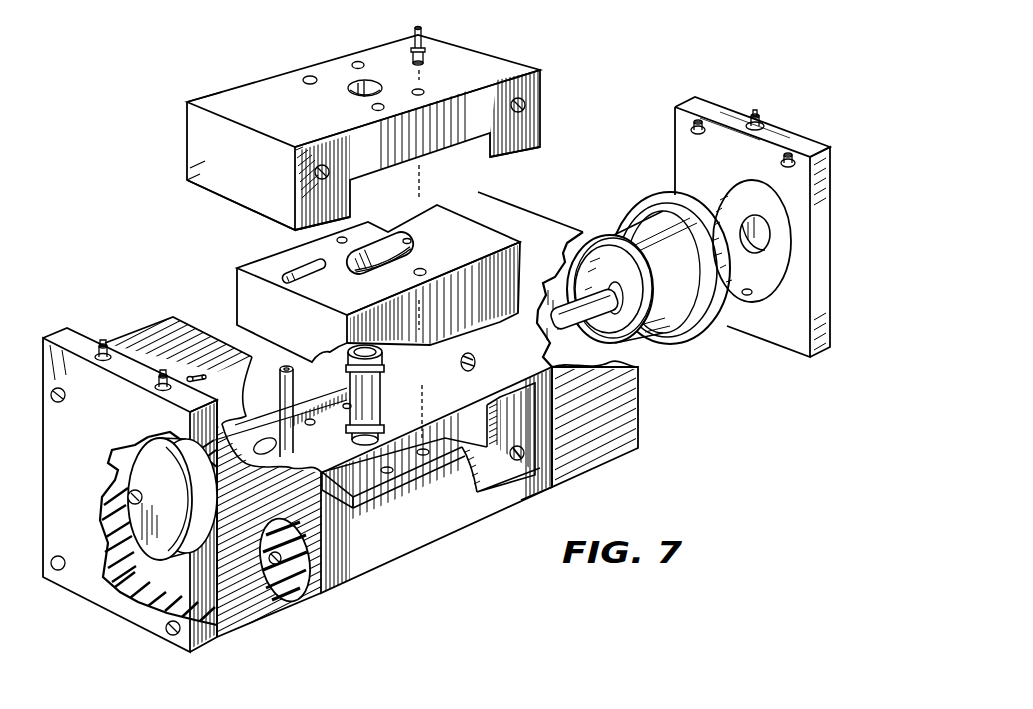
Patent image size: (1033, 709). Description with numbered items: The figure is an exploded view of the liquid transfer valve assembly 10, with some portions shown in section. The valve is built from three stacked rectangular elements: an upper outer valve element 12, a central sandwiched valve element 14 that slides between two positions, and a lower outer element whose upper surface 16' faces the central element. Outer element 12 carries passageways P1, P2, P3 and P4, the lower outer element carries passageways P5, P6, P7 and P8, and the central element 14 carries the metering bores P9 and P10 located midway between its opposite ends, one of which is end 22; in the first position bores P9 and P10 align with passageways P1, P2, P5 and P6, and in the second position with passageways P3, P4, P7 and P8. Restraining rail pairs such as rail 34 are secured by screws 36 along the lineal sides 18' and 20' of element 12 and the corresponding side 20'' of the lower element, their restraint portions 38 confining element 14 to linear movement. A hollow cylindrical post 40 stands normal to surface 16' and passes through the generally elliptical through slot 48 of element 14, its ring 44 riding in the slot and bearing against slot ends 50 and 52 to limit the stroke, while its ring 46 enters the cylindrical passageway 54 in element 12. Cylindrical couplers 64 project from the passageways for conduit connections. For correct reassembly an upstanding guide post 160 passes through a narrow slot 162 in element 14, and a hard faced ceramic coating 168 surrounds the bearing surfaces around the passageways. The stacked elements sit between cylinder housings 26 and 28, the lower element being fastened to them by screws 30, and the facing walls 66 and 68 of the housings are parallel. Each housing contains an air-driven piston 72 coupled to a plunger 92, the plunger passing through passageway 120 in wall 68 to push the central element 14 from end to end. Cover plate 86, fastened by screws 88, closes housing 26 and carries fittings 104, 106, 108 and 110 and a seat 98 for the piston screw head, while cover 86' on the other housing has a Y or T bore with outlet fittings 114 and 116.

The liquid transfer valve assembly 10 is at (178, 242).
The outer valve element 12 is at (492, 52).
The central valve element 14 is at (247, 293).
The surface of outer element 16' is at (441, 354).
The lineal side 18' is at (204, 79).
The lineal side 20' is at (301, 211).
The lineal side 20'' is at (464, 497).
The end of central element 22 is at (230, 156).
The cylinder housing 26 is at (158, 315).
The cylinder housing 28 is at (608, 462).
The screws 30 is at (283, 600).
The restraining rail pair 34 is at (490, 488).
The screws 36 is at (526, 104).
The restraint portions 38 is at (520, 147).
The hollow cylindrical post 40 is at (381, 400).
The annular ring 44 is at (381, 426).
The annular ring 46 is at (355, 356).
The through slot 48 is at (400, 235).
The slot end 50 is at (367, 272).
The slot end 52 is at (410, 240).
The cylindrical passageway 54 is at (358, 93).
The cylindrical couplers 64 is at (425, 34).
The facing wall 66 is at (323, 578).
The facing wall 68 is at (545, 490).
The piston 72 is at (660, 320).
The cover plate 86 is at (111, 519).
The cover 86' is at (782, 244).
The screws 88 is at (173, 640).
The plunger 92 is at (610, 305).
The seat 98 is at (770, 236).
The fitting 104 is at (77, 340).
The fitting 106 is at (158, 390).
The fitting 108 is at (103, 340).
The fitting 110 is at (198, 375).
The outlet fitting 114 is at (690, 128).
The outlet fitting 116 is at (795, 165).
The passageway 120 is at (476, 362).
The upstanding post 160 is at (282, 410).
The narrow slot 162 is at (300, 268).
The hard faced ceramic coating 168 is at (440, 445).
The passageway P1 is at (306, 76).
The passageway P2 is at (374, 109).
The passageway P3 is at (357, 61).
The passageway P4 is at (424, 91).
The passageway P5 is at (310, 418).
The passageway P6 is at (385, 468).
The passageway P7 is at (345, 404).
The passageway P8 is at (425, 448).
The bore P9 is at (345, 237).
The bore P10 is at (424, 269).